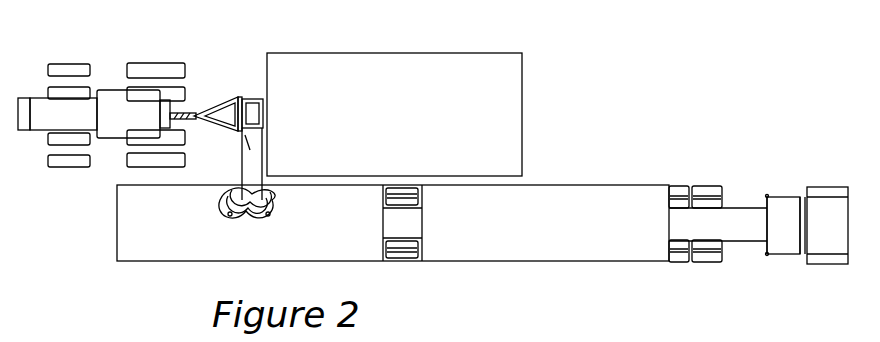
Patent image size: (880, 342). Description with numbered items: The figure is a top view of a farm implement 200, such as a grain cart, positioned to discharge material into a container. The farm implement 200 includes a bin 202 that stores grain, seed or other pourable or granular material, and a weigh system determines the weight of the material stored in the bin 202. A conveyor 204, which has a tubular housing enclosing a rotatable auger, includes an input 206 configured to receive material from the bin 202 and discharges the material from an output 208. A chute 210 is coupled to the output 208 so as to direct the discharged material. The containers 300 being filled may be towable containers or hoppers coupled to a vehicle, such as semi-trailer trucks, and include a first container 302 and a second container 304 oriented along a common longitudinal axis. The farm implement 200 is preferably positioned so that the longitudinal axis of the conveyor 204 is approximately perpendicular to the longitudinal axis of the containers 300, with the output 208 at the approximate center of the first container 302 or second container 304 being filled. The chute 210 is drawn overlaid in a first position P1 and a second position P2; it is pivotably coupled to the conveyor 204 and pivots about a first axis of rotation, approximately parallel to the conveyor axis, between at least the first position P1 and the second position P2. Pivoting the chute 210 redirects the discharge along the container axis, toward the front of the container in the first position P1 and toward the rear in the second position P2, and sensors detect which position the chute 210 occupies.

The farm implement 200 is at (325, 108).
The bin 202 is at (424, 54).
The conveyor 204 is at (240, 93).
The input 206 is at (250, 96).
The output 208 is at (256, 191).
The chute 210 is at (241, 201).
The containers 300 is at (453, 210).
The first container 302 is at (131, 262).
The second container 304 is at (633, 262).
The first position P1 is at (270, 219).
The second position P2 is at (229, 224).